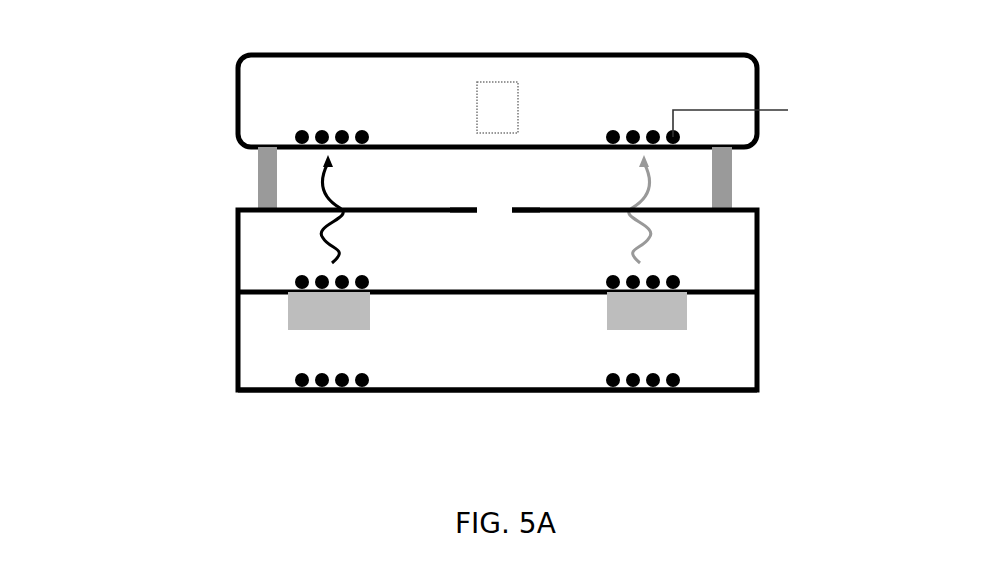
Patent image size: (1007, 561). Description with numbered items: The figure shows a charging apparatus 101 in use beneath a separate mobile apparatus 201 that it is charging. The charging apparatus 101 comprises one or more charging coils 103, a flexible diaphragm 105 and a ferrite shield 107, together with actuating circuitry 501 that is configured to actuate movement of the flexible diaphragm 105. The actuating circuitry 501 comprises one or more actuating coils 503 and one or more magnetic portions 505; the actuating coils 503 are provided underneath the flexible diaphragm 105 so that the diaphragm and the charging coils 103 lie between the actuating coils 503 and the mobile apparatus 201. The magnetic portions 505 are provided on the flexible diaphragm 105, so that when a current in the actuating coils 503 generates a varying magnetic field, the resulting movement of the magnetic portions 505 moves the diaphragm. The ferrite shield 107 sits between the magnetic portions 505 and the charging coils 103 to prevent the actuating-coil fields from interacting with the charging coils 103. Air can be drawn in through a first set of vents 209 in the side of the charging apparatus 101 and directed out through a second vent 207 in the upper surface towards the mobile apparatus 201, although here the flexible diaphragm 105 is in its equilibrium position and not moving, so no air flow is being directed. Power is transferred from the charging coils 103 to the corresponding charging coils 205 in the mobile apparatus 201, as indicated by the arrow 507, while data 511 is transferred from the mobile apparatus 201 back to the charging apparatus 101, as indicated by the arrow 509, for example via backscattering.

The charging apparatus 101 is at (758, 210).
The charging coils 103 is at (300, 282).
The flexible diaphragm 105 is at (440, 294).
The ferrite shield 107 is at (698, 298).
The mobile apparatus 201 is at (233, 78).
The charging coils 205 is at (640, 120).
The second vent 207 is at (236, 262).
The first set of vents 209 is at (493, 210).
The actuating circuitry 501 is at (305, 388).
The actuating coils 503 is at (658, 388).
The magnetic portions 505 is at (693, 328).
The arrow 507 is at (348, 190).
The arrow 509 is at (620, 190).
The data 511 is at (758, 117).